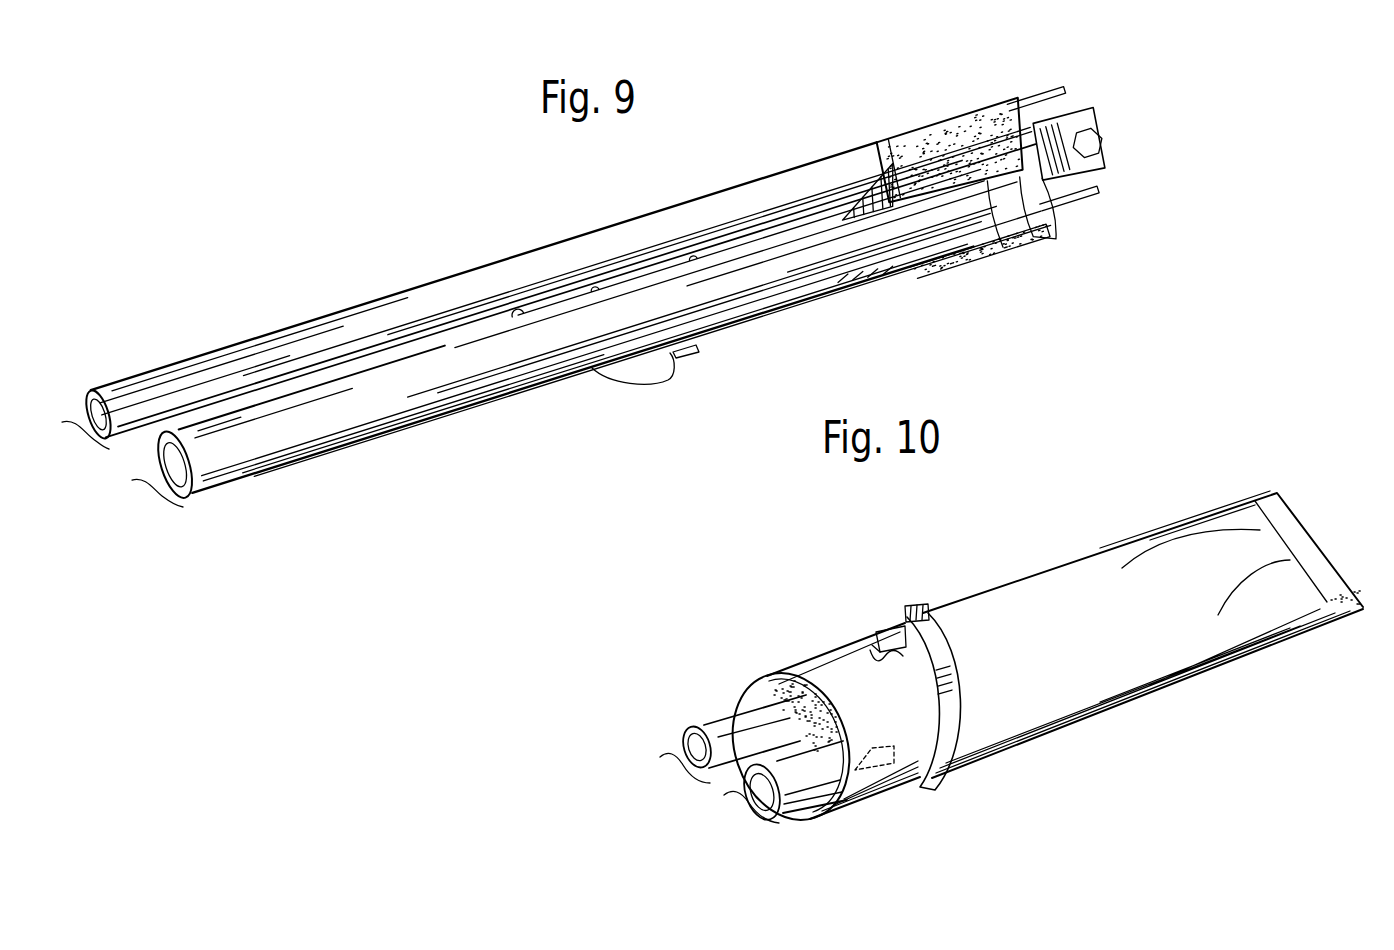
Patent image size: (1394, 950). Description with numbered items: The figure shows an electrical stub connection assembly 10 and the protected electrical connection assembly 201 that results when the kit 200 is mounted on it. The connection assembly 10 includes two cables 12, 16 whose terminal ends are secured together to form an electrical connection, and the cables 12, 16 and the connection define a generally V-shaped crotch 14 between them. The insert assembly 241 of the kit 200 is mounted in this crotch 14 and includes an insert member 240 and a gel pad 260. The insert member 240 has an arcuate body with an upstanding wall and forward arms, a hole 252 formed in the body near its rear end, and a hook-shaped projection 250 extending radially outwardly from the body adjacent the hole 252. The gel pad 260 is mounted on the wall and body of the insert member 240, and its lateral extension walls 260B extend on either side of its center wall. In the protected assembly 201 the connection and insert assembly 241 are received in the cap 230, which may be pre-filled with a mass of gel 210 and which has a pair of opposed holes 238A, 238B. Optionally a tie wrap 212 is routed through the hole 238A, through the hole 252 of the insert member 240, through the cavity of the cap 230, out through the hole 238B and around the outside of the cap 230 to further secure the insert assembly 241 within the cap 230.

In FIG. 9, the connection assembly 10 is at (992, 81).
In FIG. 10, the connection assembly 10 is at (728, 679).
In FIG. 9, the cable 12 is at (253, 367).
In FIG. 10, the cable 12 is at (717, 732).
In FIG. 9, the V-shaped crotch 14 is at (938, 101).
In FIG. 9, the cable 16 is at (281, 458).
In FIG. 10, the cable 16 is at (786, 796).
In FIG. 10, the kit 200 is at (1003, 550).
In FIG. 10, the protected electrical connection assembly 201 is at (937, 517).
In FIG. 10, the gel 210 is at (790, 697).
In FIG. 10, the tie wrap 212 is at (957, 757).
In FIG. 10, the cap 230 is at (1263, 613).
In FIG. 10, the hole 238A is at (893, 635).
In FIG. 10, the hole 238B is at (888, 801).
In FIG. 9, the insert member 240 is at (1022, 250).
In FIG. 10, the insert member 240 is at (830, 801).
In FIG. 9, the insert assembly 241 is at (666, 393).
In FIG. 10, the projection 250 is at (877, 642).
In FIG. 10, the hole 252 is at (888, 636).
In FIG. 9, the gel pad 260 is at (900, 142).
In FIG. 9, the lateral extension wall 260B is at (1033, 244).